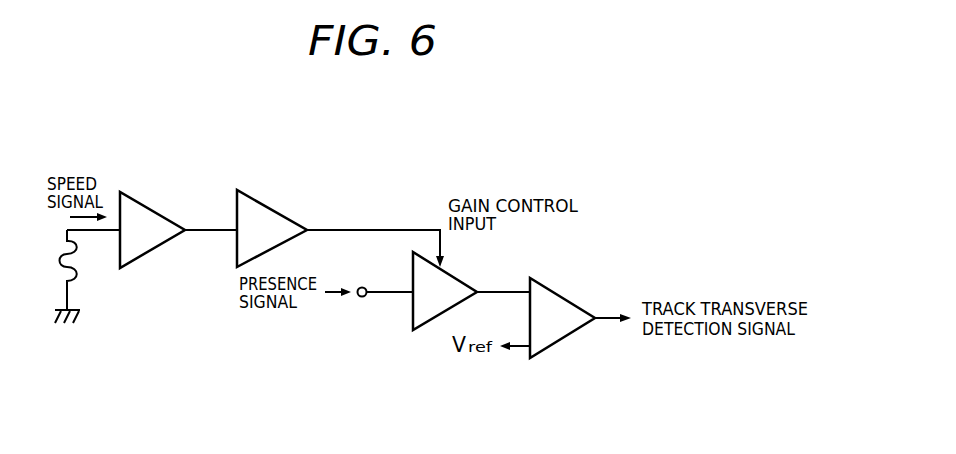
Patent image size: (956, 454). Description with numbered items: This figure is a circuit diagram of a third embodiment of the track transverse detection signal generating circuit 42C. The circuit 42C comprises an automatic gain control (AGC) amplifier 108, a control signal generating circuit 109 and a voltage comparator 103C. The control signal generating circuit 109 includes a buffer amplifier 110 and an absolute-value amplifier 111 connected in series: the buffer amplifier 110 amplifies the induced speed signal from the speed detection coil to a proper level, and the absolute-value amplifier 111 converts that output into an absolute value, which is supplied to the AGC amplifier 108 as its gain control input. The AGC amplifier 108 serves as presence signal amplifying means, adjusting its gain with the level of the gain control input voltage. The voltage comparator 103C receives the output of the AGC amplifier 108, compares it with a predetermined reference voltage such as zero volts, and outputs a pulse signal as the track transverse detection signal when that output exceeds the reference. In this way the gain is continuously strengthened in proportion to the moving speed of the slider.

The control signal generating circuit 109 is at (225, 156).
The buffer amplifier 110 is at (158, 213).
The absolute-value amplifier 111 is at (280, 213).
The AGC amplifier 108 is at (412, 318).
The voltage comparator 103C is at (565, 298).
The track transverse detection signal generating circuit 42C is at (612, 202).